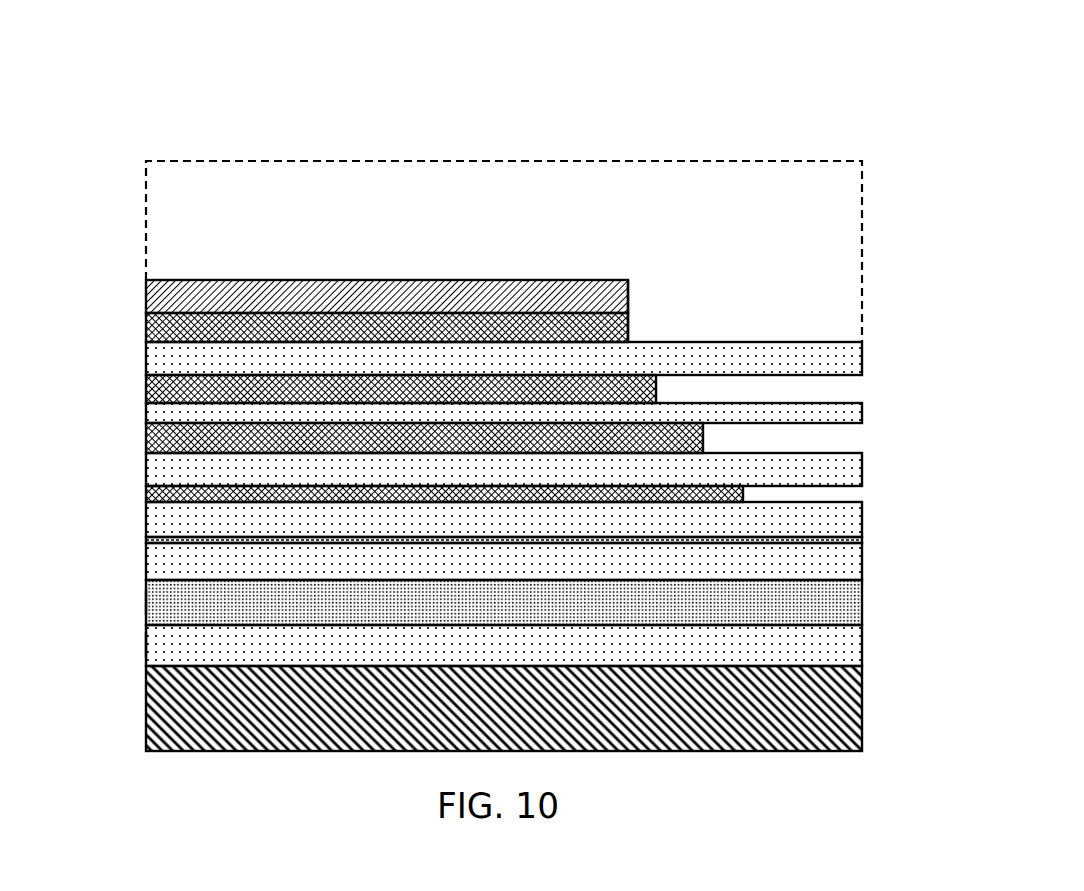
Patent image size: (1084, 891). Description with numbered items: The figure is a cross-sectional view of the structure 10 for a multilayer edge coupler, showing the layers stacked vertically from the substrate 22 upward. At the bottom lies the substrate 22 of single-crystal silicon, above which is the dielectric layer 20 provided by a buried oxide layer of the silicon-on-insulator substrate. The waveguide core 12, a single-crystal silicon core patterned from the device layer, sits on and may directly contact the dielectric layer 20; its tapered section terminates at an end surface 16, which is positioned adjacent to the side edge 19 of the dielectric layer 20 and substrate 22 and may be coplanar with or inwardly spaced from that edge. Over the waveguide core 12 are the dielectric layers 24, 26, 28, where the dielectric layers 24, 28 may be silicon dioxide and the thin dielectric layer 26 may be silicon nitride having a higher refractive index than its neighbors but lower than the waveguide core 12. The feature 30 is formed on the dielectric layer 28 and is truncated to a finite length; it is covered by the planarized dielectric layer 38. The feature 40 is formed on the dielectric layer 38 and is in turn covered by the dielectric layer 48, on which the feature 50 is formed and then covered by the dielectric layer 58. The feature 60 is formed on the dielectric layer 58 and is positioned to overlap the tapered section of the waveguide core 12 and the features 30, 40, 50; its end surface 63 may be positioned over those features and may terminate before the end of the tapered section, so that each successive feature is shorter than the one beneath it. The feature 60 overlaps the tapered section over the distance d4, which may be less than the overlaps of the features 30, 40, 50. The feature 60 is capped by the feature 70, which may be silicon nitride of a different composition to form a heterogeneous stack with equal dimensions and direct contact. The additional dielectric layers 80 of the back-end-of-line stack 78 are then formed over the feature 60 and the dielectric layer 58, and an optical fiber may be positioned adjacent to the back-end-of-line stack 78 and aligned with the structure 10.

The structure 10 is at (152, 123).
The waveguide core 12 is at (838, 602).
The end surface 16 is at (146, 603).
The side edge 19 is at (146, 645).
The dielectric layer 20 is at (838, 650).
The substrate 22 is at (838, 718).
The dielectric layer 24 is at (838, 560).
The dielectric layer 26 is at (146, 540).
The dielectric layer 28 is at (835, 515).
The feature 30 is at (477, 498).
The dielectric layer 38 is at (838, 473).
The feature 40 is at (376, 443).
The dielectric layer 48 is at (838, 432).
The feature 50 is at (303, 398).
The dielectric layer 58 is at (838, 372).
The feature 60 is at (266, 328).
The end surface 63 is at (628, 322).
The feature 70 is at (497, 300).
The back-end-of-line stack 78 is at (130, 167).
The additional dielectric layers 80 is at (818, 280).
The distance d4 is at (146, 22).